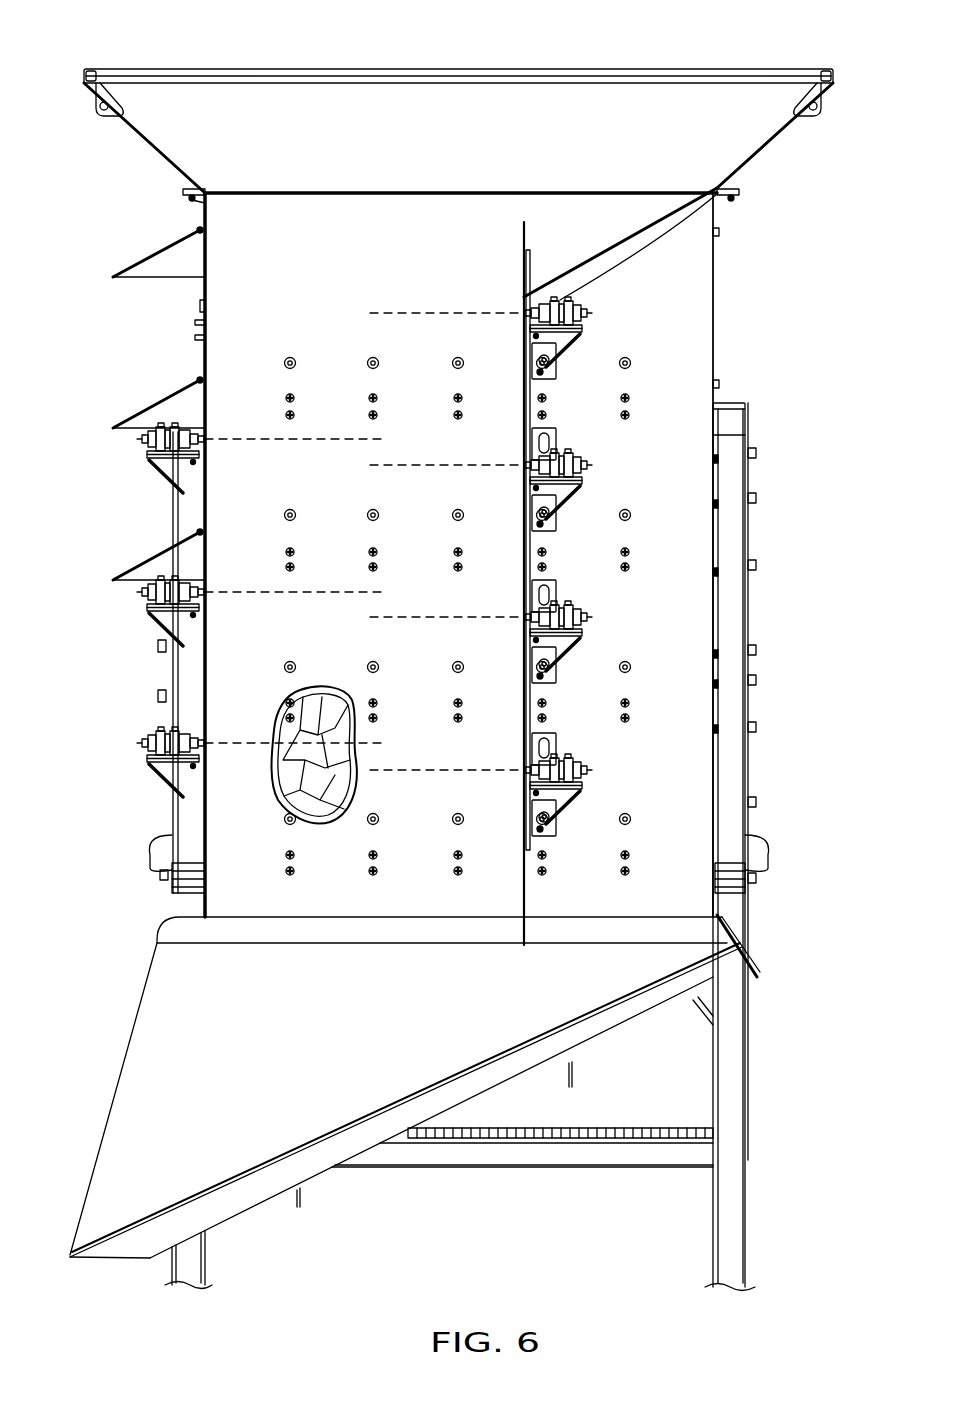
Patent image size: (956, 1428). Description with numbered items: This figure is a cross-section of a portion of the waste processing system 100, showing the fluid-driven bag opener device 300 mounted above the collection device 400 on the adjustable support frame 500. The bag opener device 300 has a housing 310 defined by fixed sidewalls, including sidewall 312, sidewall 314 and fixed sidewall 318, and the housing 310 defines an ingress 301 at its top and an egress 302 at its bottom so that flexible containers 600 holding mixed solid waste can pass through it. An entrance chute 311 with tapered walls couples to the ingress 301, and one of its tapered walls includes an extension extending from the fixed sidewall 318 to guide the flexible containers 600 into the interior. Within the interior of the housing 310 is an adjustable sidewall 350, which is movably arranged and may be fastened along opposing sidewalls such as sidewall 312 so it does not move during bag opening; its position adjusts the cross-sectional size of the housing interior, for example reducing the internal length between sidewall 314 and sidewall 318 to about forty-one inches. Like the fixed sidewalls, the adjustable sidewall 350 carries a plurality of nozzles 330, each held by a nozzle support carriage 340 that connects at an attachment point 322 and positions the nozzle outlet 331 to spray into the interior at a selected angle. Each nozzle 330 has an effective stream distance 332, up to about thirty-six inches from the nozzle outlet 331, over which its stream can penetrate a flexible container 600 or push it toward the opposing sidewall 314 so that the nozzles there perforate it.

The waste processing system 100 is at (574, 33).
The fluid-driven bag opener device 300 is at (122, 33).
The ingress 301 is at (431, 181).
The egress 302 is at (252, 918).
The housing 310 is at (720, 396).
The entrance chute 311 is at (248, 67).
The sidewall 312 is at (292, 300).
The sidewall 314 is at (205, 307).
The fixed sidewall 318 is at (713, 289).
The attachment point 322 is at (287, 414).
The nozzle 330 is at (134, 441).
The nozzle outlet 331 is at (521, 299).
The effective stream distance 332 is at (424, 313).
The nozzle support carriage 340 is at (160, 470).
The adjustable sidewall 350 is at (528, 713).
The collection device 400 is at (156, 1125).
The adjustable support frame 500 is at (753, 1198).
The flexible container 600 is at (320, 690).